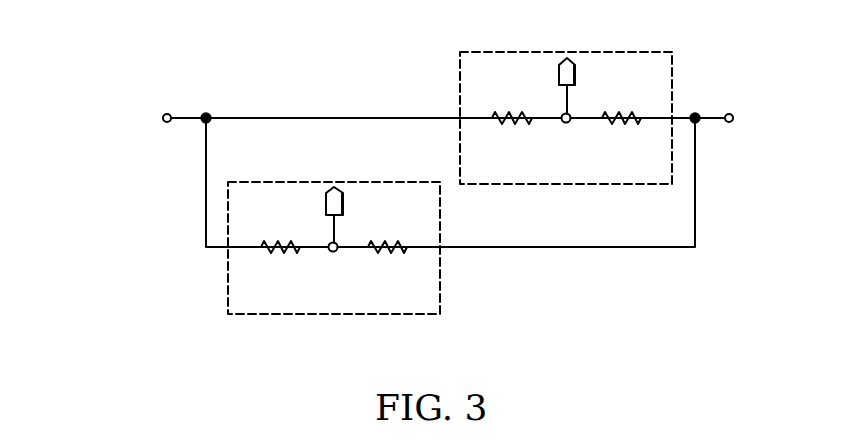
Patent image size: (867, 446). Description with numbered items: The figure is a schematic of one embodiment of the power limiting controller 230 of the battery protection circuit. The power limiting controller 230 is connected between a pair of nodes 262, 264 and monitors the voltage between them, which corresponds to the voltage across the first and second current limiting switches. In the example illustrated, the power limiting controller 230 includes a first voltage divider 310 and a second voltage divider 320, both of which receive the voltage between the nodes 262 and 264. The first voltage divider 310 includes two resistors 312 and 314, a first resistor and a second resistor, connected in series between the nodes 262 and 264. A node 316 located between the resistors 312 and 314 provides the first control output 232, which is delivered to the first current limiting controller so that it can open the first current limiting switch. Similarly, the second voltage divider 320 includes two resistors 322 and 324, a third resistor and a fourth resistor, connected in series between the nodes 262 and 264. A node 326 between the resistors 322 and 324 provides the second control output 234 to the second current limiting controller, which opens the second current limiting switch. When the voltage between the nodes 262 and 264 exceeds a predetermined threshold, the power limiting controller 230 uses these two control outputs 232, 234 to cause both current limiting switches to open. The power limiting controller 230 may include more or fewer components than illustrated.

The power limiting controller 230 is at (144, 42).
The node 262 is at (162, 118).
The node 264 is at (730, 124).
The first voltage divider 310 is at (334, 315).
The resistor 312 is at (283, 255).
The resistor 314 is at (391, 255).
The node 316 is at (333, 252).
The first control output 232 is at (325, 205).
The second voltage divider 320 is at (566, 185).
The resistor 322 is at (514, 126).
The resistor 324 is at (627, 126).
The node 326 is at (566, 124).
The second control output 234 is at (557, 75).